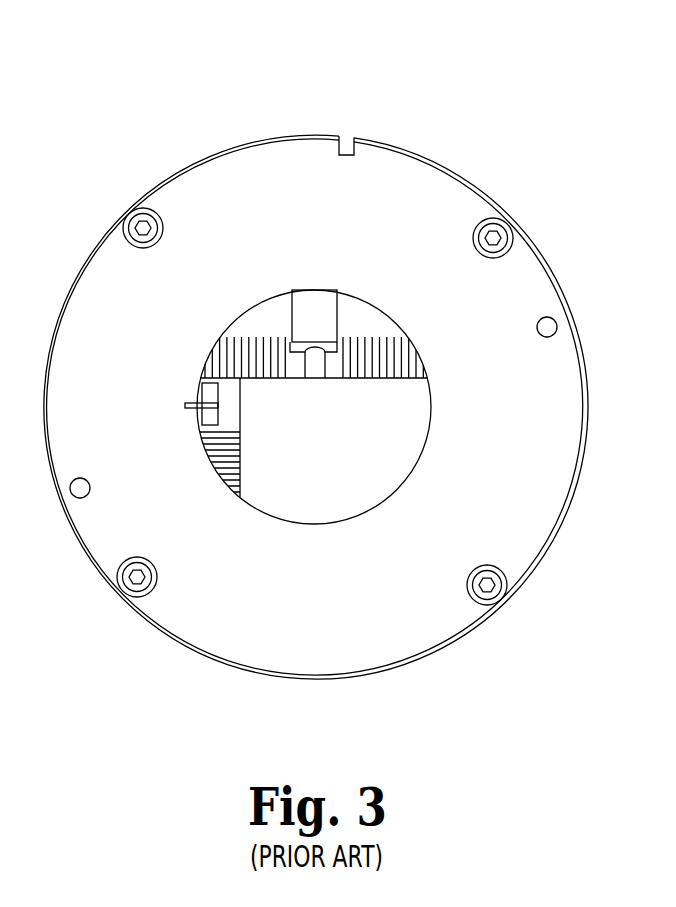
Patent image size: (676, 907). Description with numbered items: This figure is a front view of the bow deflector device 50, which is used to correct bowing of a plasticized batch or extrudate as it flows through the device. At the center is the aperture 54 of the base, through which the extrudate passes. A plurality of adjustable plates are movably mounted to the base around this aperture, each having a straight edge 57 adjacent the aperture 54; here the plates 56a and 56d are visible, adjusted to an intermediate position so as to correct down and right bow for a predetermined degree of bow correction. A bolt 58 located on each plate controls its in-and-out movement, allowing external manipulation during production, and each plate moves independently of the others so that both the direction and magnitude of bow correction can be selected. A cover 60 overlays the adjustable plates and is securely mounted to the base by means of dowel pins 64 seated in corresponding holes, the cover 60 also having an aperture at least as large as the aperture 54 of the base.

The bow deflector device 50 is at (318, 44).
The aperture 54 is at (383, 490).
The adjustable plate 56a is at (388, 373).
The adjustable plate 56d is at (240, 458).
The straight edge 57 is at (292, 378).
The bolt 58 is at (318, 337).
The cover 60 is at (375, 652).
The dowel pin 64 is at (140, 209).